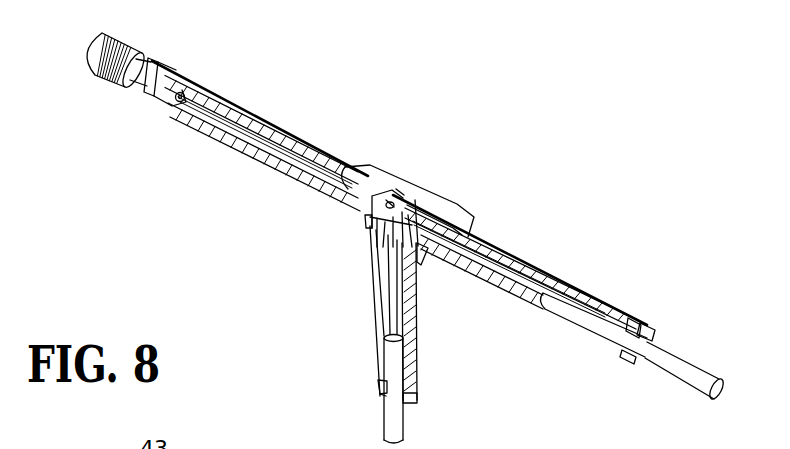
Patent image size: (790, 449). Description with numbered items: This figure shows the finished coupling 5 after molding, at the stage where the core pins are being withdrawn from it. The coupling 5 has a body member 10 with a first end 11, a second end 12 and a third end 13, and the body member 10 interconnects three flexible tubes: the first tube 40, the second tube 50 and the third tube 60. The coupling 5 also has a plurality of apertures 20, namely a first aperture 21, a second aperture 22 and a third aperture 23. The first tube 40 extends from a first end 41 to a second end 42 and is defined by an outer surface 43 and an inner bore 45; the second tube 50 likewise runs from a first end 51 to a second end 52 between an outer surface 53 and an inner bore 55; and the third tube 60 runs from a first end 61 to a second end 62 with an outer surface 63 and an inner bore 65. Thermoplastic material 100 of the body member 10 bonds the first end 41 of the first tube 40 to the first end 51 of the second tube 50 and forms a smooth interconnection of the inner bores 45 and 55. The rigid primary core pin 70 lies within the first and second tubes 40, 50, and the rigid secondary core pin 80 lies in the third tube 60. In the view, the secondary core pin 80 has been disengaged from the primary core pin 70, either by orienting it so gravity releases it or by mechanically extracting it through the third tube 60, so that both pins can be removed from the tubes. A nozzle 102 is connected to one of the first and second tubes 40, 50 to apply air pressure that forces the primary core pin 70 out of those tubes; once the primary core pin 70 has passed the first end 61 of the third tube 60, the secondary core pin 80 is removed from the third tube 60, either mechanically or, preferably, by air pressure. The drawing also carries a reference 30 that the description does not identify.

The coupling 5 is at (366, 113).
The body member 10 is at (391, 182).
The first end 11 is at (342, 160).
The second end 12 is at (459, 225).
The third end 13 is at (376, 267).
The plurality of apertures 20 is at (496, 151).
The first aperture 21 is at (328, 160).
The second aperture 22 is at (465, 226).
The third aperture 23 is at (373, 276).
The plunger assembly 30 is at (300, 267).
The first tube 40 is at (212, 130).
The first end 41 is at (366, 224).
The second end 42 is at (150, 98).
The outer surface 43 is at (155, 58).
The inner bore 45 is at (148, 93).
The second tube 50 is at (550, 315).
The first end 51 is at (421, 258).
The second end 52 is at (627, 360).
The outer surface 53 is at (651, 334).
The inner bore 55 is at (635, 326).
The third tube 60 is at (381, 348).
The first end 61 is at (390, 238).
The second end 62 is at (418, 400).
The outer surface 63 is at (378, 380).
The inner bore 65 is at (383, 394).
The primary core pin 70 is at (675, 378).
The secondary core pin 80 is at (396, 421).
The thermoplastic material 100 is at (400, 197).
The nozzle 102 is at (105, 50).